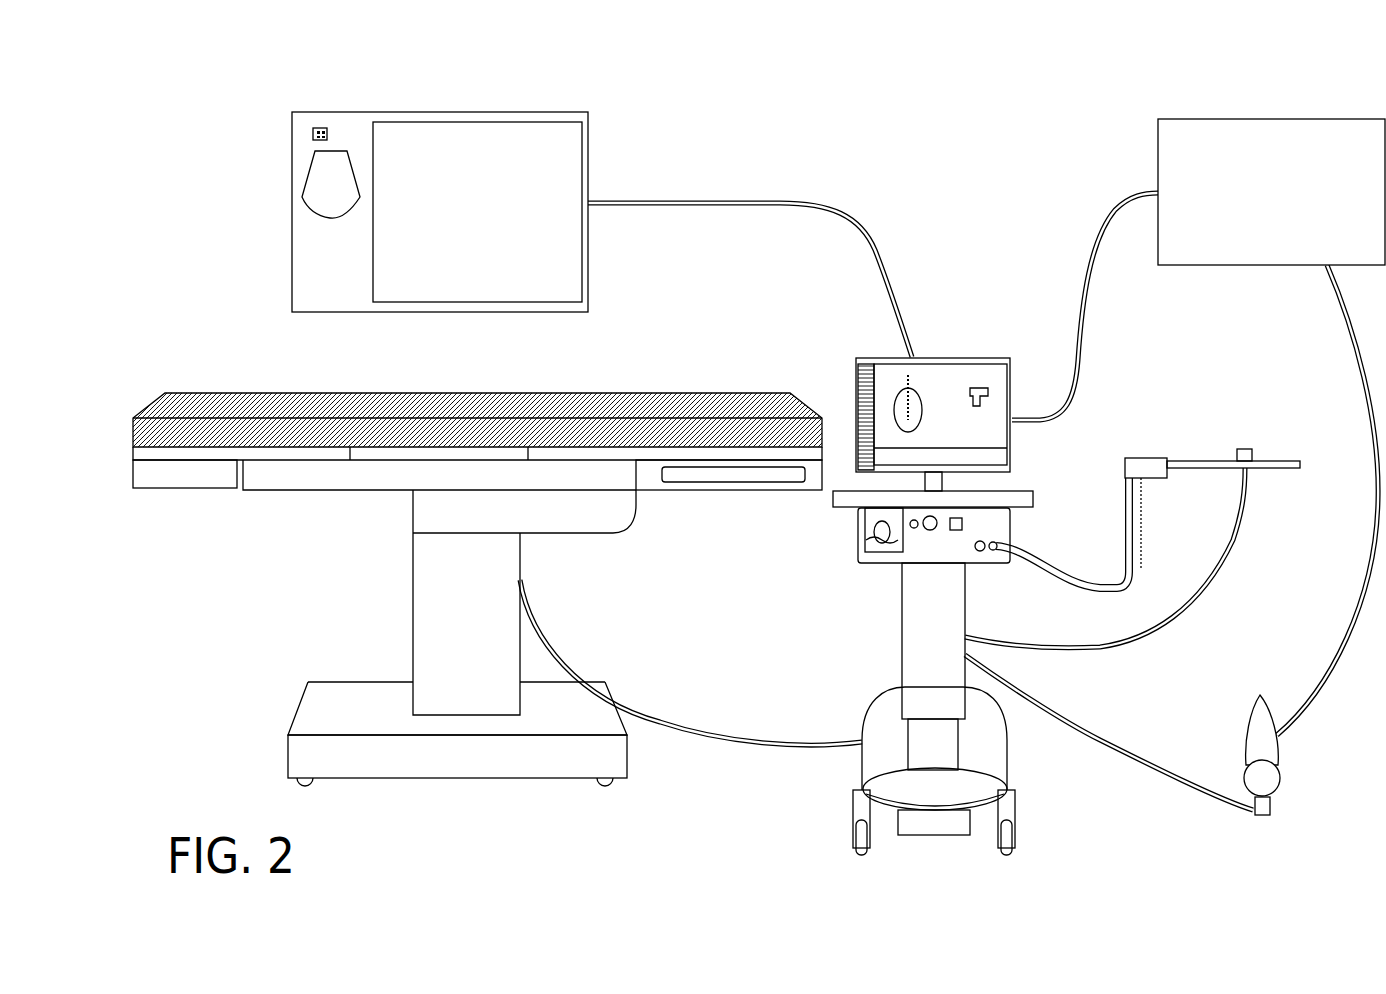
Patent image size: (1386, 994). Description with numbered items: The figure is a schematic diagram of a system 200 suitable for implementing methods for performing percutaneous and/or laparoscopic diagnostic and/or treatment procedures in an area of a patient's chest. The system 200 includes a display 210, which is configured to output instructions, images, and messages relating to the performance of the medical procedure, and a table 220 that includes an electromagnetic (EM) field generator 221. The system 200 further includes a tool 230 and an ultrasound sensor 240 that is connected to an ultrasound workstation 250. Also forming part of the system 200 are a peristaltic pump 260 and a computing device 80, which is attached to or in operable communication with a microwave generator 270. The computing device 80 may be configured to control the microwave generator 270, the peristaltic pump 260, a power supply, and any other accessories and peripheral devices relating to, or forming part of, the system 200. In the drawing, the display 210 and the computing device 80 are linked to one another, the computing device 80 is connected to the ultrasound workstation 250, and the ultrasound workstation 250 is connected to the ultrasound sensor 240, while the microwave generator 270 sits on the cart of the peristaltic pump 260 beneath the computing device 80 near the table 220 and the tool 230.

The system 200 is at (443, 60).
The display 210 is at (592, 162).
The table 220 is at (468, 565).
The electromagnetic (EM) field generator 221 is at (389, 462).
The computing device 80 is at (1002, 357).
The tool 230 is at (1138, 458).
The ultrasound sensor 240 is at (1262, 693).
The ultrasound workstation 250 is at (1305, 248).
The peristaltic pump 260 is at (902, 628).
The microwave generator 270 is at (858, 548).